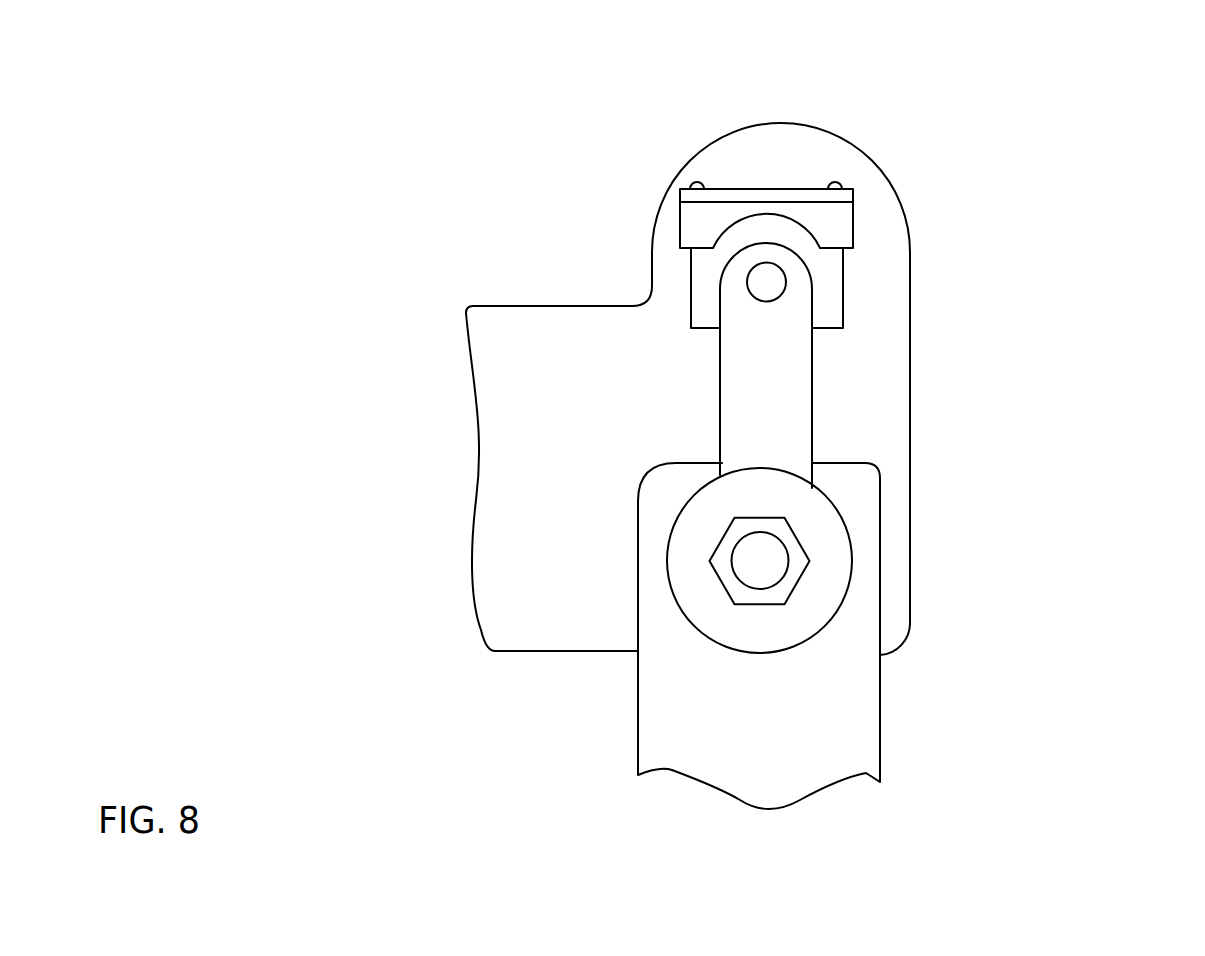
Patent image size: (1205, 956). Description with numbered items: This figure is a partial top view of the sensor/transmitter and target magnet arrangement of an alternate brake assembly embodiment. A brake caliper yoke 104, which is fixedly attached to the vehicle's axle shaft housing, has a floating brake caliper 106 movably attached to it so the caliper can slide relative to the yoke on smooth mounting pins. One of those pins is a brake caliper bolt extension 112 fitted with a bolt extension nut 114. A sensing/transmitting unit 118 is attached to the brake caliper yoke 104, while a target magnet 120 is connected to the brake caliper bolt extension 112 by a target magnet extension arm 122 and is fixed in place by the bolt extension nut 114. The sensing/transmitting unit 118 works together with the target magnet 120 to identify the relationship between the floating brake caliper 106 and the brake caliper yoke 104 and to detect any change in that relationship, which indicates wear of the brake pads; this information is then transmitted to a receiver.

The brake caliper yoke 104 is at (670, 266).
The floating brake caliper 106 is at (664, 742).
The brake caliper bolt extension 112 is at (760, 561).
The bolt extension nut 114 is at (757, 599).
The sensing/transmitting unit 118 is at (707, 221).
The target magnet 120 is at (776, 286).
The target magnet extension arm 122 is at (795, 447).